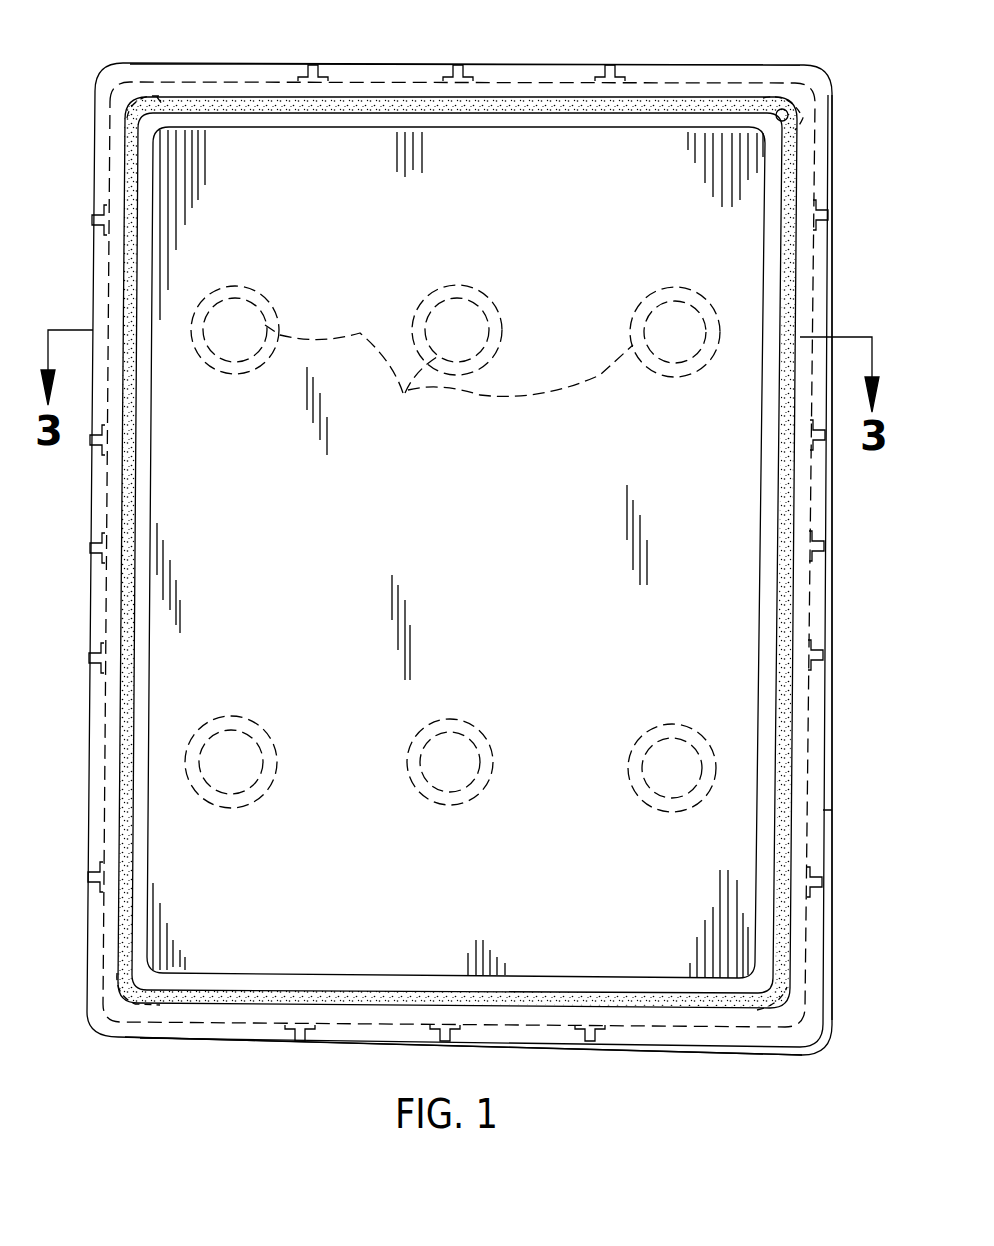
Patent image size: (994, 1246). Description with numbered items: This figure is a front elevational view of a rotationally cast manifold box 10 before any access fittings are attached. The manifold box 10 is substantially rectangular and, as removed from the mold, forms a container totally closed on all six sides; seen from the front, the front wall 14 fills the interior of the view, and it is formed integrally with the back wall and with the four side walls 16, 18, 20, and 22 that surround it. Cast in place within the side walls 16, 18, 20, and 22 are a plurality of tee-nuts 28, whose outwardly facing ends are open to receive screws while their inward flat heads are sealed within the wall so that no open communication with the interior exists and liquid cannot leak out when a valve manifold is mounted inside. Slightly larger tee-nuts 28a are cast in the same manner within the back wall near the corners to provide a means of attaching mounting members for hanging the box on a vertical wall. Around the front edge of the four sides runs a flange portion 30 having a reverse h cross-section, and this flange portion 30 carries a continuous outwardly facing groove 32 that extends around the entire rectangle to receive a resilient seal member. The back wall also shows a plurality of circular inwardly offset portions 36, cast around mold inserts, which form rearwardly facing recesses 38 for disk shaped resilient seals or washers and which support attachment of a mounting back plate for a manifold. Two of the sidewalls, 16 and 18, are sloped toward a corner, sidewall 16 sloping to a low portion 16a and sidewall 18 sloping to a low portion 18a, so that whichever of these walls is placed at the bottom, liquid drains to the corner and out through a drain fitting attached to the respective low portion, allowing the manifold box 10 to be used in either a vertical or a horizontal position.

The manifold box 10 is at (640, 61).
The front wall 14 is at (197, 278).
The side wall 16 is at (833, 283).
The low portion 16a is at (829, 996).
The side wall 18 is at (218, 1043).
The low portion 18a is at (755, 1056).
The side wall 20 is at (93, 508).
The side wall 22 is at (543, 64).
The tee-nuts 28 is at (457, 63).
The tee-nuts 28a is at (137, 95).
The flange portion 30 is at (108, 750).
The groove 32 is at (128, 808).
The circular inwardly offset portions 36 is at (633, 322).
The recesses 38 is at (449, 374).